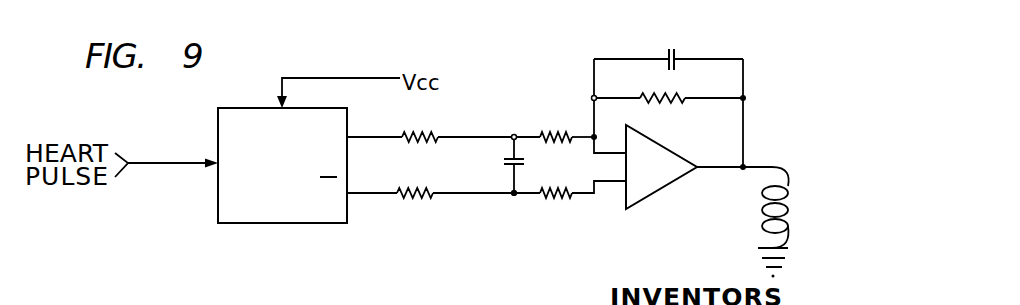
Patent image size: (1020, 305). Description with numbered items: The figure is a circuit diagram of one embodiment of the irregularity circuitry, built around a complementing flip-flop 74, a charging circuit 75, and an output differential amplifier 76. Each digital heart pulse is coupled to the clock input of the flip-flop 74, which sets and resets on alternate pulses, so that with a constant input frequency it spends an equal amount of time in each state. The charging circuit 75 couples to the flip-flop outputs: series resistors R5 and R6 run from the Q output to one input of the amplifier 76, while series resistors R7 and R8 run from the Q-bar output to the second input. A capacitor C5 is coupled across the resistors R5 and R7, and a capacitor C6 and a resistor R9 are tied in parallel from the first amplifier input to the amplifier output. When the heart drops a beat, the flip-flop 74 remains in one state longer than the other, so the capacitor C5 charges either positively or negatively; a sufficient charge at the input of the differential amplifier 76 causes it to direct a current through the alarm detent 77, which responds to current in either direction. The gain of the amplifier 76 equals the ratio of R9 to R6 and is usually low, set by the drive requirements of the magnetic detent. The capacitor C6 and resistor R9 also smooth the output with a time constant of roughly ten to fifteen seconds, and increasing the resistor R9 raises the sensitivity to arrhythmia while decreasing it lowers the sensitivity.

The complementing flip-flop 74 is at (282, 165).
The charging circuit 75 is at (500, 221).
The output differential amplifier 76 is at (624, 197).
The alarm detent 77 is at (789, 203).
The resistor R5 is at (420, 125).
The resistor R6 is at (557, 124).
The resistor R7 is at (415, 207).
The resistor R8 is at (557, 207).
The resistor R9 is at (669, 113).
The capacitor C5 is at (496, 166).
The capacitor C6 is at (668, 45).